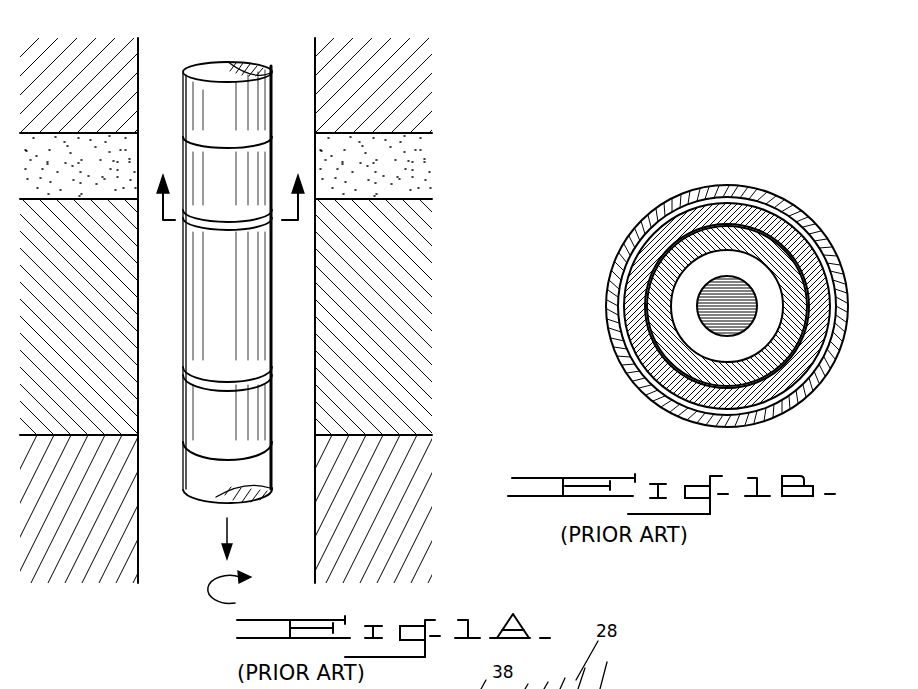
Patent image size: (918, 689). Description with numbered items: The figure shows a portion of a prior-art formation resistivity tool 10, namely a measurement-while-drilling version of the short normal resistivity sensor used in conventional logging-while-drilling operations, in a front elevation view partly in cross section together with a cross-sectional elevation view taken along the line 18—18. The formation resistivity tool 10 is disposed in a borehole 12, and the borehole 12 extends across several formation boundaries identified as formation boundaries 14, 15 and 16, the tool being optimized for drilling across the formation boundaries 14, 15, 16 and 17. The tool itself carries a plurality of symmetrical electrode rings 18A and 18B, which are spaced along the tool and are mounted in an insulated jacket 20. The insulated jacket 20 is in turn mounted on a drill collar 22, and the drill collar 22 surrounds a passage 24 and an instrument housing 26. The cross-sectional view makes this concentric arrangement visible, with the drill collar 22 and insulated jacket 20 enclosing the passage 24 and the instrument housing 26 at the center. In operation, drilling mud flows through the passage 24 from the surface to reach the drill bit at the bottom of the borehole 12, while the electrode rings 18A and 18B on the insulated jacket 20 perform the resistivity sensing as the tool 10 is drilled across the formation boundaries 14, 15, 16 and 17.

In FIG. 1A, the formation resistivity tool 10 is at (290, 95).
In FIG. 1A, the borehole 12 is at (305, 128).
In FIG. 1A, the formation boundary 14 is at (86, 102).
In FIG. 1A, the formation boundary 15 is at (86, 167).
In FIG. 1A, the formation boundary 16 is at (52, 297).
In FIG. 1A, the formation boundary 17 is at (86, 514).
In FIG. 1A, the electrode rings 18 is at (225, 185).
In FIG. 1A, the electrode ring 18A is at (270, 390).
In FIG. 1B, the electrode ring 18A is at (835, 291).
In FIG. 1A, the electrode ring 18B is at (230, 232).
In FIG. 1A, the insulated jacket 20 is at (237, 330).
In FIG. 1B, the insulated jacket 20 is at (820, 352).
In FIG. 1A, the drill collar 22 is at (205, 95).
In FIG. 1B, the drill collar 22 is at (772, 370).
In FIG. 1B, the passage 24 is at (722, 260).
In FIG. 1B, the instrument housing 26 is at (747, 287).